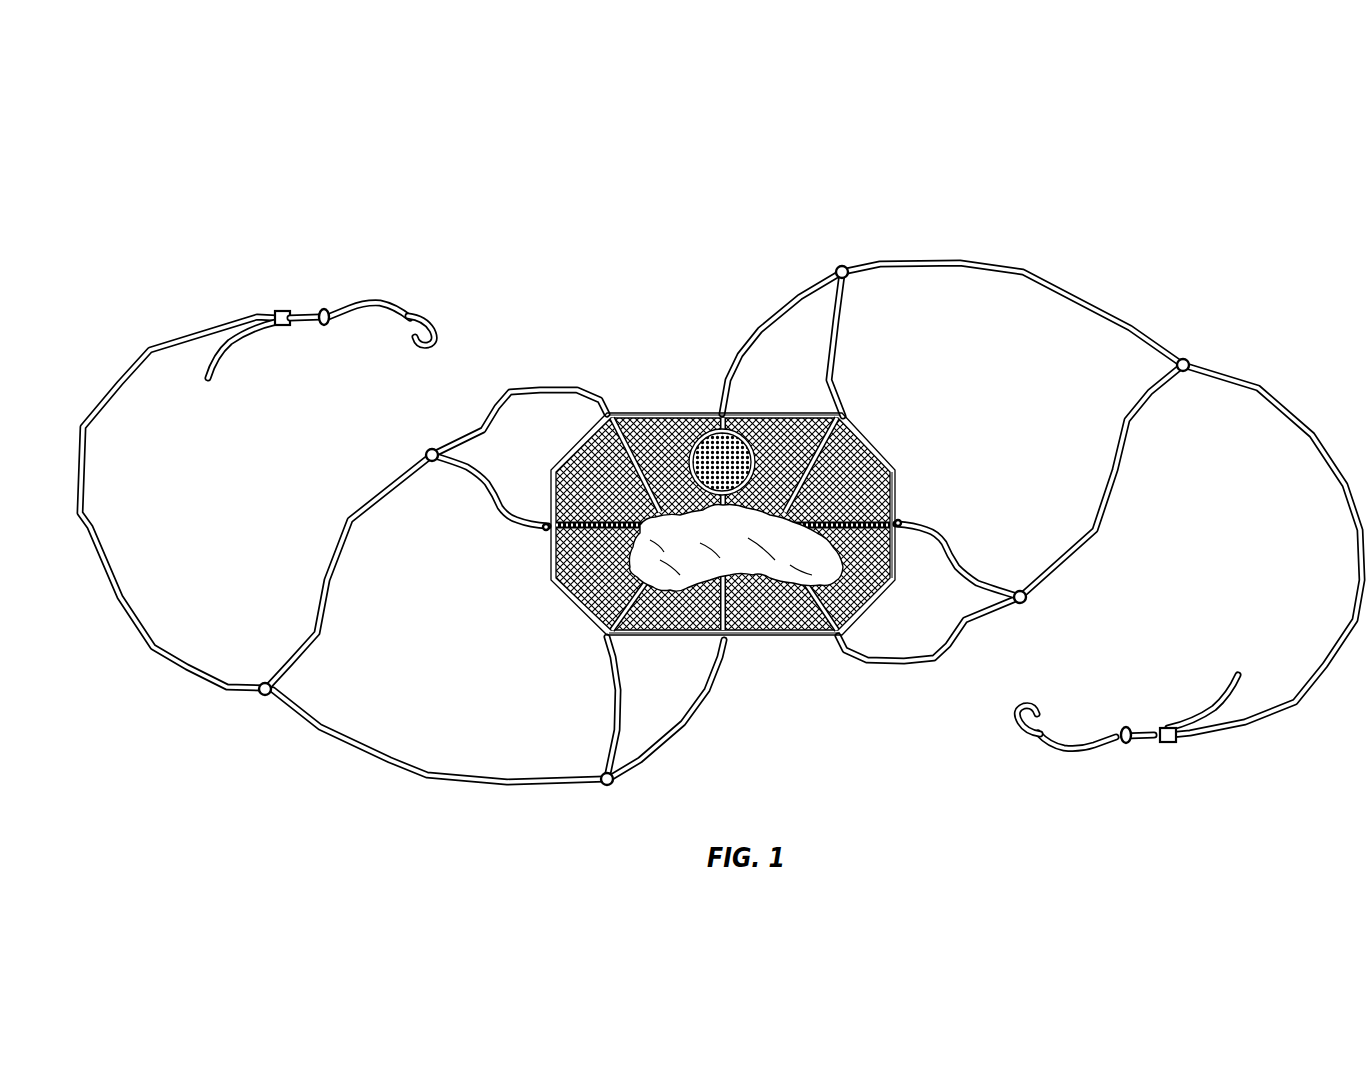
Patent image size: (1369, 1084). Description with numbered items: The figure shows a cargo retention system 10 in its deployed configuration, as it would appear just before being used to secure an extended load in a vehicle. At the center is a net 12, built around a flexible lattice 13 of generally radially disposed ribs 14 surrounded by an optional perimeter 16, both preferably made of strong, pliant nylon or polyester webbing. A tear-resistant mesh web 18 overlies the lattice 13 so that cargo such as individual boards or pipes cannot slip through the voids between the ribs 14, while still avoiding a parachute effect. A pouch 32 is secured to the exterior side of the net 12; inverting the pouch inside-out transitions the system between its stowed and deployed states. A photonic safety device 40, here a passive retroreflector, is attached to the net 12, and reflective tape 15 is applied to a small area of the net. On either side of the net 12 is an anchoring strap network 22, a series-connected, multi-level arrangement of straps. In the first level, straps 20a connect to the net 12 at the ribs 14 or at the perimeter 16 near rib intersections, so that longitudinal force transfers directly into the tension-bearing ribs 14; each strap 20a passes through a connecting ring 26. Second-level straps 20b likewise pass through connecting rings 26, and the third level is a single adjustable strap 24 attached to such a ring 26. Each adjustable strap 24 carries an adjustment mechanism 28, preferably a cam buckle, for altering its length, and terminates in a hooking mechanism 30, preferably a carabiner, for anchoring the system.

The cargo retention system 10 is at (705, 449).
The net 12 is at (728, 488).
The flexible lattice 13 is at (818, 407).
The ribs 14 is at (628, 420).
The reflective tape 15 is at (558, 529).
The perimeter 16 is at (897, 495).
The mesh web 18 is at (783, 635).
The straps 20a is at (500, 510).
The straps 20b is at (348, 525).
The anchoring strap network 22 is at (297, 593).
The adjustable strap 24 is at (128, 358).
The connecting ring 26 is at (1193, 362).
The adjustment mechanism 28 is at (285, 311).
The hooking mechanism 30 is at (430, 320).
The pouch 32 is at (597, 609).
The photonic safety device 40 is at (705, 450).